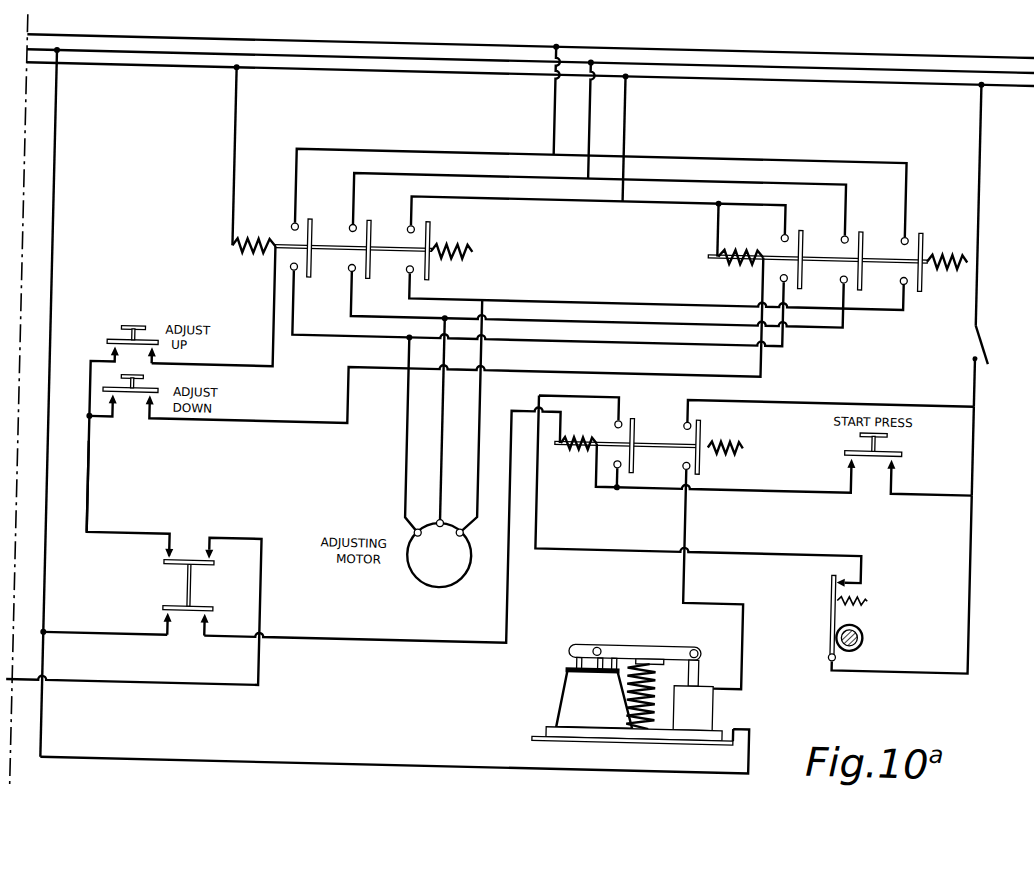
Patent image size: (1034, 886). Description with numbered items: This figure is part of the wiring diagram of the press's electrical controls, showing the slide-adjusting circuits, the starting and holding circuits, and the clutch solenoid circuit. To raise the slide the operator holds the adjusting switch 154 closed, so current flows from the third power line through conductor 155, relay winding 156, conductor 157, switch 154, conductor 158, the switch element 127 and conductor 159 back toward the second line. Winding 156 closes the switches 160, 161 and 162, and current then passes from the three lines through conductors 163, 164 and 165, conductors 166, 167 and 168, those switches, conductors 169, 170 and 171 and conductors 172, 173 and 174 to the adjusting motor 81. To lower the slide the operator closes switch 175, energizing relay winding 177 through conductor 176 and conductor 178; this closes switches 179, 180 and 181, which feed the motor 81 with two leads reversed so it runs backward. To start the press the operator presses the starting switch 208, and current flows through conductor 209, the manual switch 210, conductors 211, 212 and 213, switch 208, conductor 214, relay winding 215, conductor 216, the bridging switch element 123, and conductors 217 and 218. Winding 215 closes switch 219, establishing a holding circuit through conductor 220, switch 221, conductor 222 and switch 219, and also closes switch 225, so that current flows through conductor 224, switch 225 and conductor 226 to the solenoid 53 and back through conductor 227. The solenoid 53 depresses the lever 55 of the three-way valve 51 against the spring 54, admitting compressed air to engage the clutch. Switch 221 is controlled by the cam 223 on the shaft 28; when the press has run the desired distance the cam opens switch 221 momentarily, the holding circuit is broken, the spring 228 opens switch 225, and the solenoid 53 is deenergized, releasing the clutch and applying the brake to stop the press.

The shaft 28 is at (876, 630).
The three-way valve 51 is at (594, 698).
The solenoid 53 is at (728, 692).
The spring 54 is at (668, 648).
The lever 55 is at (618, 632).
The adjusting motor 81 is at (478, 572).
The bridging switch element 123 is at (178, 603).
The switch element 127 is at (224, 561).
The adjusting switch 154 is at (113, 336).
The conductor 155 is at (237, 122).
The relay winding 156 is at (238, 250).
The conductor 157 is at (279, 292).
The conductor 158 is at (98, 473).
The conductor 159 is at (274, 665).
The switch 160 is at (316, 272).
The switch 161 is at (374, 272).
The switch 162 is at (434, 272).
The conductor 163 is at (556, 89).
The conductor 164 is at (590, 110).
The conductor 165 is at (626, 101).
The conductor 166 is at (483, 143).
The conductor 167 is at (519, 166).
The conductor 168 is at (569, 188).
The conductor 169 is at (520, 329).
The conductor 170 is at (567, 309).
The conductor 171 is at (624, 290).
The conductor 172 is at (416, 453).
The conductor 173 is at (451, 411).
The conductor 174 is at (488, 378).
The switch 175 is at (150, 395).
The conductor 176 is at (722, 213).
The relay winding 177 is at (735, 248).
The conductor 178 is at (627, 360).
The switch 179 is at (808, 216).
The switch 180 is at (868, 215).
The switch 181 is at (928, 216).
The starting switch 208 is at (912, 436).
The conductor 209 is at (982, 164).
The manual switch 210 is at (994, 336).
The conductor 211 is at (982, 364).
The conductor 212 is at (982, 436).
The conductor 213 is at (918, 475).
The conductor 214 is at (779, 476).
The relay winding 215 is at (582, 440).
The conductor 216 is at (404, 632).
The conductor 217 is at (101, 633).
The conductor 218 is at (57, 237).
The switch 219 is at (643, 450).
The conductor 220 is at (982, 492).
The switch 221 is at (844, 578).
The conductor 222 is at (733, 522).
The cam 223 is at (862, 608).
The conductor 224 is at (840, 385).
The switch 225 is at (712, 420).
The conductor 226 is at (756, 632).
The conductor 227 is at (768, 740).
The spring 228 is at (725, 442).